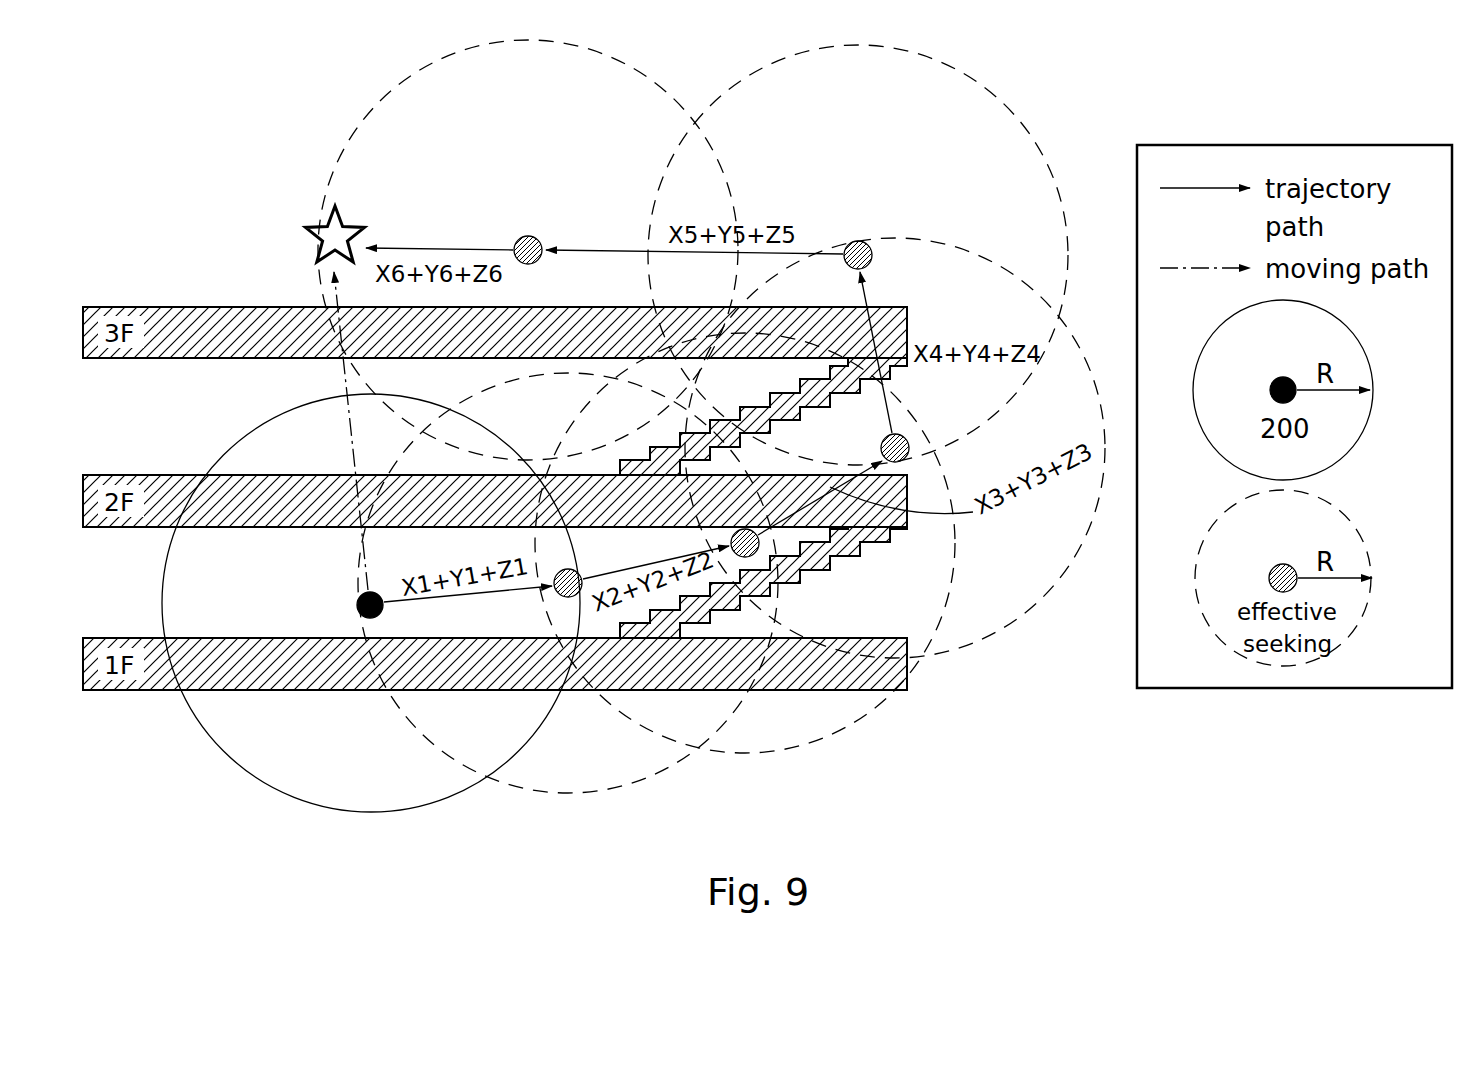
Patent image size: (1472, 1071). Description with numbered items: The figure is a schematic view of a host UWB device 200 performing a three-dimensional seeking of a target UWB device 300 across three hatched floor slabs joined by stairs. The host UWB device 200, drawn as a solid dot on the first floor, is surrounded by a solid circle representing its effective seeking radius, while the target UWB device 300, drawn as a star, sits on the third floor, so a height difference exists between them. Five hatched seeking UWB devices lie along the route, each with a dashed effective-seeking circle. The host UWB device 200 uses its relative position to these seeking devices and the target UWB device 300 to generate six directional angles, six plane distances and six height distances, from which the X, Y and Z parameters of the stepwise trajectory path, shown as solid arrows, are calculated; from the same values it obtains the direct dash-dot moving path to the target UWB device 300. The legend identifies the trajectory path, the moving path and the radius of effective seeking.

The host UWB device 200 is at (358, 603).
The target UWB device 300 is at (320, 231).